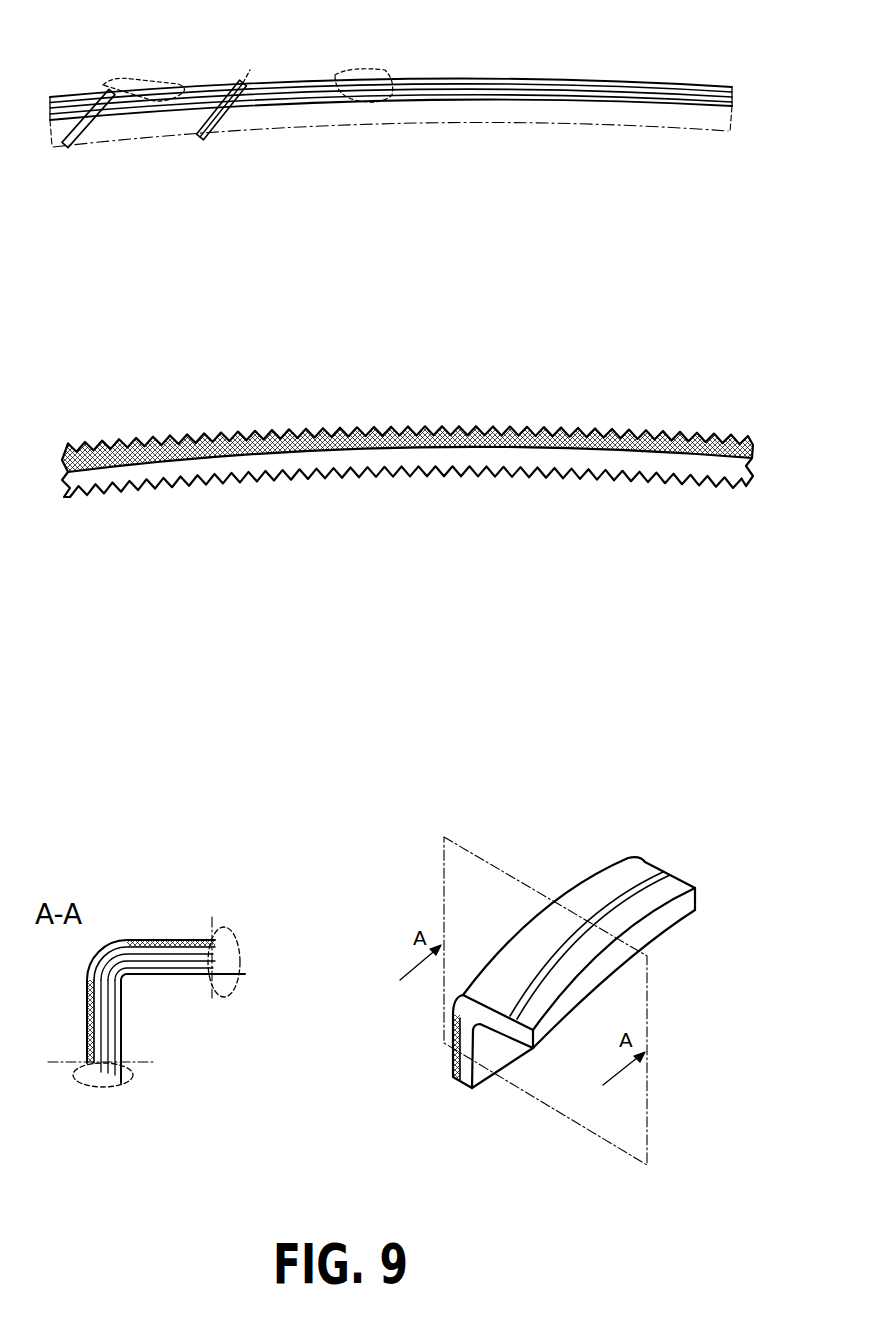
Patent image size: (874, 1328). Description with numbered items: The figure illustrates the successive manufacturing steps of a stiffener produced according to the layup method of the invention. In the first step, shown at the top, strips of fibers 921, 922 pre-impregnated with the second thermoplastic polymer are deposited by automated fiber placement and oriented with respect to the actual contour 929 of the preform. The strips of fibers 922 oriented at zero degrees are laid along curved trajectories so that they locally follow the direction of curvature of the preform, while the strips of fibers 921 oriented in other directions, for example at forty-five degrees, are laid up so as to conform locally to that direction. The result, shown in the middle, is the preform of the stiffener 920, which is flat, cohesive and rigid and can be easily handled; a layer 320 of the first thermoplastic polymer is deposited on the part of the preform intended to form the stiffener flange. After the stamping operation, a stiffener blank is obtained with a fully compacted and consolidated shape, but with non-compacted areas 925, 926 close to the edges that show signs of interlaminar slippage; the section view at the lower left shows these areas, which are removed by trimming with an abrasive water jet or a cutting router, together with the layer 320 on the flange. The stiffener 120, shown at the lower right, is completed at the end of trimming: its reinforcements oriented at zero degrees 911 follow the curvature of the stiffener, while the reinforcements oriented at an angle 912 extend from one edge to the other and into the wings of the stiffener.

The stiffener 120 is at (600, 935).
The layer of the first thermoplastic polymer 320 is at (518, 437).
The reinforcements oriented at 0° 911 is at (607, 910).
The reinforcements oriented at an angle 912 is at (117, 1033).
The preform of the stiffener 920 is at (391, 711).
The strips of fibers oriented in other directions 921 is at (196, 88).
The strips of fibers oriented at 0° 922 is at (345, 75).
The non-compacted area 925 is at (103, 1085).
The non-compacted area 926 is at (240, 950).
The actual contour of the preform 929 is at (323, 120).